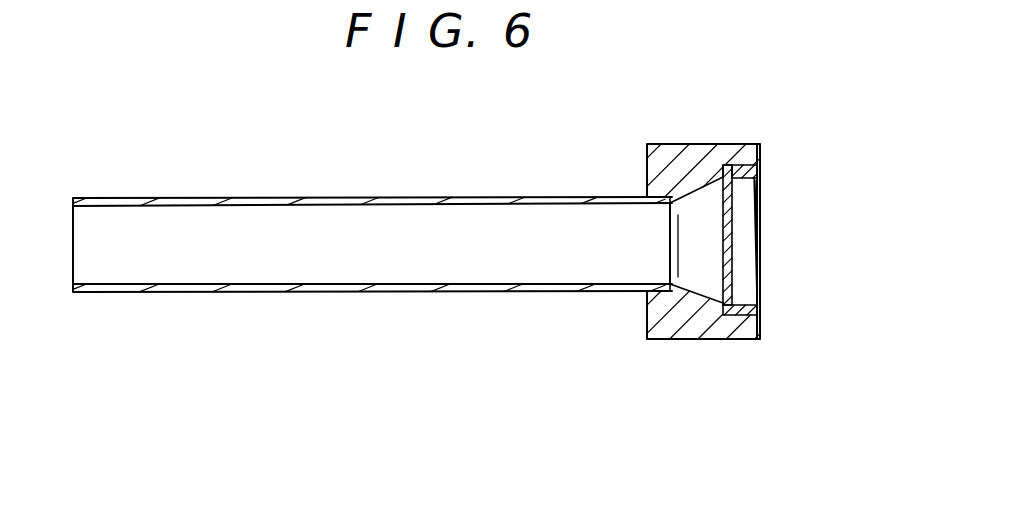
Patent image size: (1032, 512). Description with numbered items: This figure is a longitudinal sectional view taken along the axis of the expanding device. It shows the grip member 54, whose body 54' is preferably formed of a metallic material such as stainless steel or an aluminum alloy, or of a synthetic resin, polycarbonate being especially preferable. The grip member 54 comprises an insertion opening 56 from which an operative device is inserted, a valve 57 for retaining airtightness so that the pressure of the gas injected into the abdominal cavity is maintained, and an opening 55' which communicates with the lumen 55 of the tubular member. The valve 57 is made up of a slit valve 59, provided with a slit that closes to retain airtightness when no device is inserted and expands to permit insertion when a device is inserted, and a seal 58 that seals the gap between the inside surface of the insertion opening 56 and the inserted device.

The grip member 54 is at (710, 187).
The body of the grip 54' is at (669, 353).
The lumen 55 is at (372, 305).
The opening 55' is at (706, 309).
The insertion opening 56 is at (744, 241).
The valve 57 is at (821, 267).
The seal 58 is at (750, 302).
The slit valve 59 is at (738, 260).